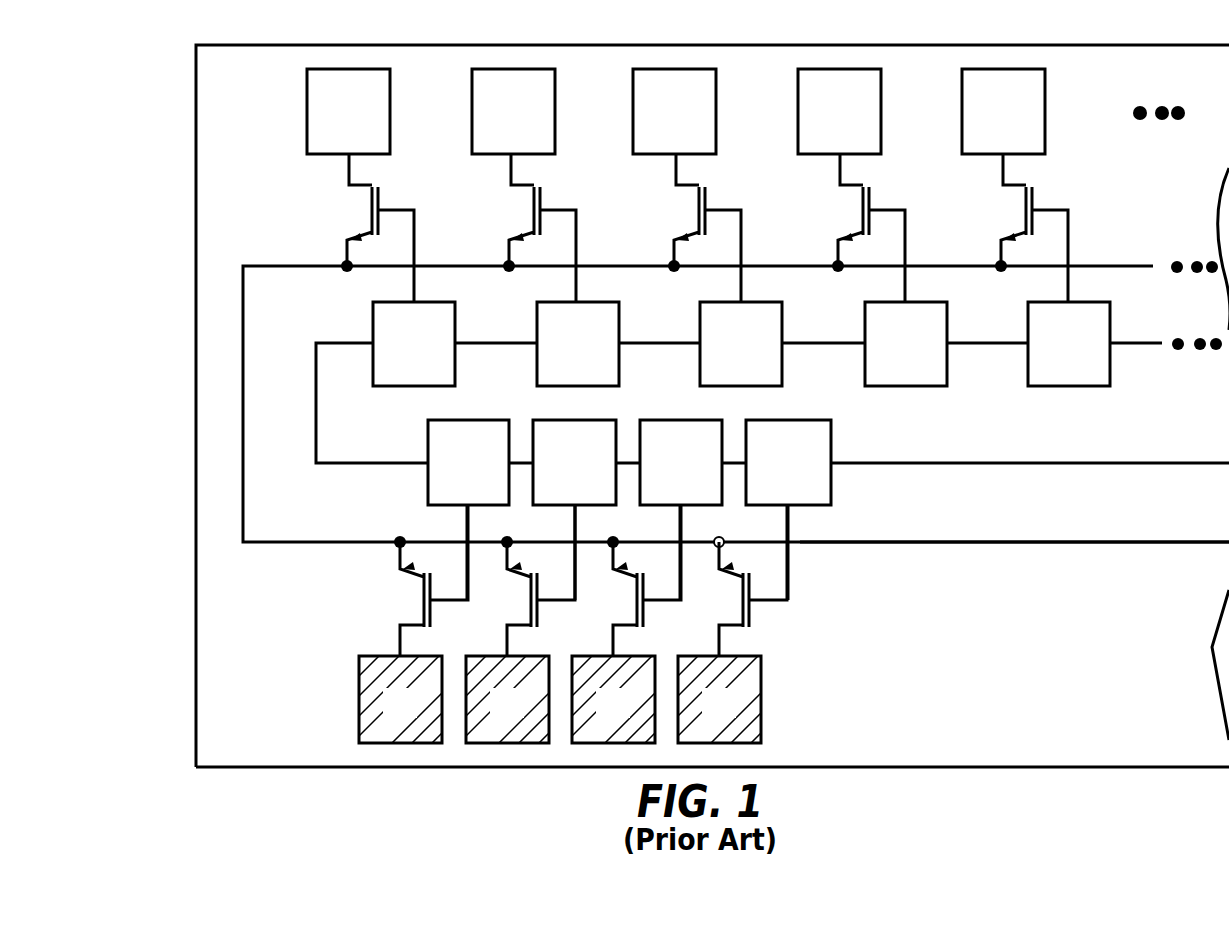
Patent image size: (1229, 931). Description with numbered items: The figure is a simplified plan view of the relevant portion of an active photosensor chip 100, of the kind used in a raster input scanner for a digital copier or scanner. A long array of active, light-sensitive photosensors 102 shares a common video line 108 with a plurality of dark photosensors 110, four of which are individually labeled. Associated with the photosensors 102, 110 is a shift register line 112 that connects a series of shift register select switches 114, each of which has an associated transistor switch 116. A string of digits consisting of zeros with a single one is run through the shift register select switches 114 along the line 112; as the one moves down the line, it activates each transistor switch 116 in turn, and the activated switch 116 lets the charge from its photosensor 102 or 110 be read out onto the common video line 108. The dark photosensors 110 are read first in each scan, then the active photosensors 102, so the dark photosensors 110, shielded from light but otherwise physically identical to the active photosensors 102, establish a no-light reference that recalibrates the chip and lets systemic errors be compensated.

The image sensor 100 is at (196, 282).
The active photosensor 102 is at (305, 112).
The common video line 108 is at (1072, 542).
The dark photosensor 110 is at (360, 703).
The shift register line 112 is at (1123, 463).
The shift register select switch 114 is at (455, 355).
The transistor switch 116 is at (532, 210).